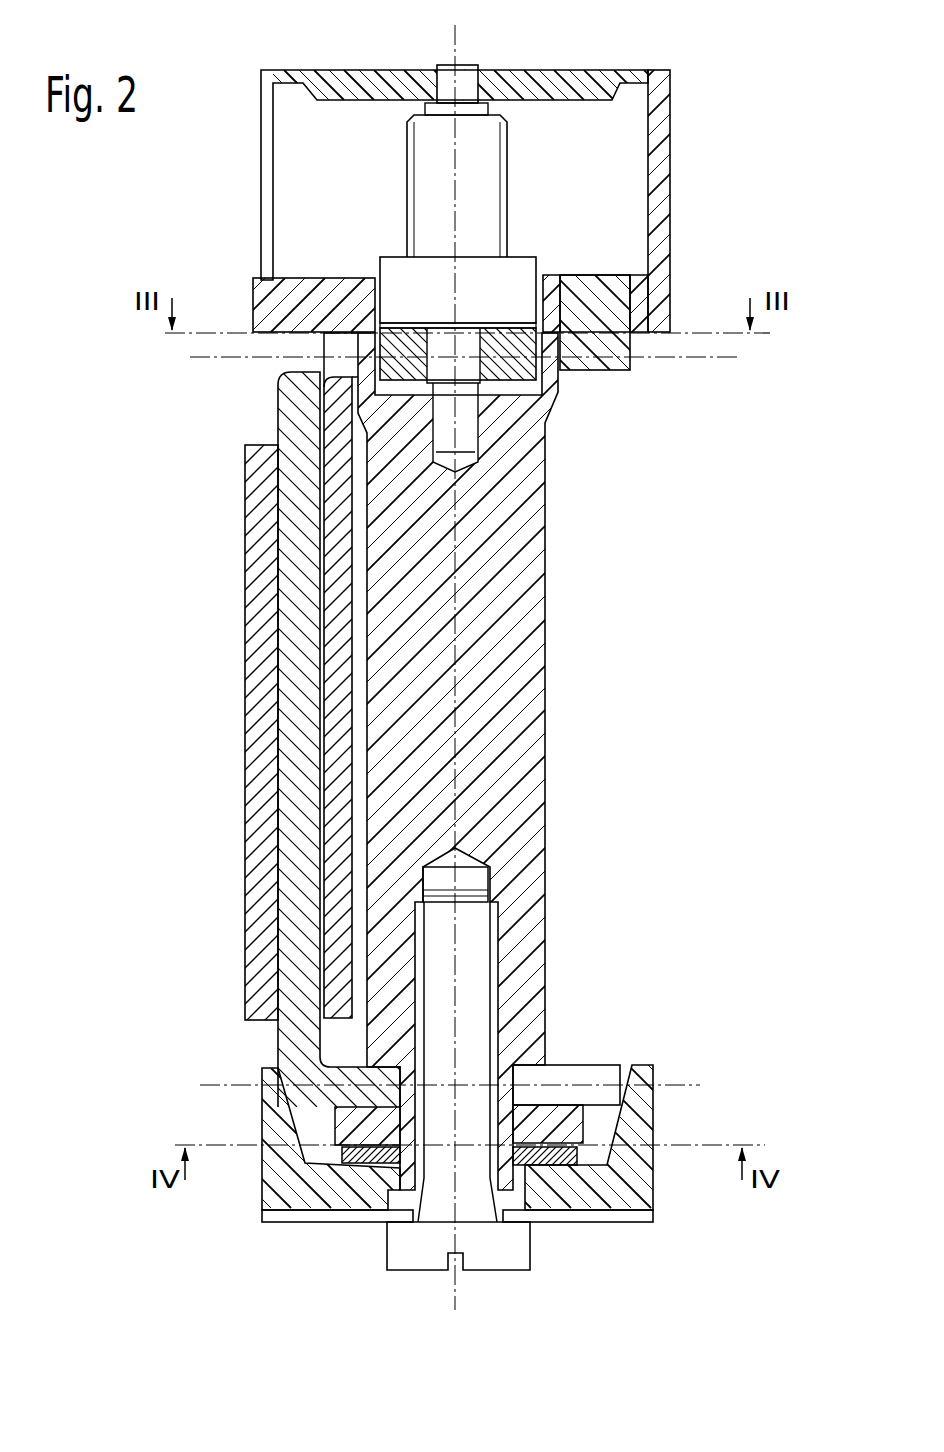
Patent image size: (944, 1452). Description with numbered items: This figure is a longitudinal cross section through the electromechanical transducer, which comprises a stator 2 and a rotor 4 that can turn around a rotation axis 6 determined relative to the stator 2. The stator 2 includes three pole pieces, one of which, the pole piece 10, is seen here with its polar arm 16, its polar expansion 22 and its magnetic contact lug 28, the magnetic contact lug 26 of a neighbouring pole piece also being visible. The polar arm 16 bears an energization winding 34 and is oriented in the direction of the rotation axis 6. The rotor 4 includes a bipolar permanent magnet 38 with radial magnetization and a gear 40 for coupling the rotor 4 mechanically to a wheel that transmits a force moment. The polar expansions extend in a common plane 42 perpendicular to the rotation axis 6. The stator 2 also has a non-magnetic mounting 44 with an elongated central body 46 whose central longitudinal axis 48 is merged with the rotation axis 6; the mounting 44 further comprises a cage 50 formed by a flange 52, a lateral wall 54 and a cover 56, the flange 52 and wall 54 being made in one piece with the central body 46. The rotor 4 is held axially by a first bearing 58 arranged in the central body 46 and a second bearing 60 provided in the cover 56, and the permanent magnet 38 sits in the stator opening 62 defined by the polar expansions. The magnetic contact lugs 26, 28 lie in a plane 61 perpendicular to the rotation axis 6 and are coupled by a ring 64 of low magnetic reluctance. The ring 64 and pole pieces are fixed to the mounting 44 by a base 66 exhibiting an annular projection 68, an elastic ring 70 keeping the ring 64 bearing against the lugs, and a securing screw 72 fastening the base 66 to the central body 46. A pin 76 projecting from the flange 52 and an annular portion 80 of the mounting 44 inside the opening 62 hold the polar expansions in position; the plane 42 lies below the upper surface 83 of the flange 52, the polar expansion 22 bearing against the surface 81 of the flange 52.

The stator 2 is at (750, 521).
The rotor 4 is at (522, 207).
The rotation axis 6 is at (455, 1025).
The pole piece 10 is at (290, 727).
The polar arm 16 is at (320, 630).
The polar expansion 22 is at (328, 347).
The magnetic contact lug 26 is at (582, 1076).
The magnetic contact lug 28 is at (345, 1090).
The energization winding 34 is at (258, 552).
The bipolar permanent magnet 38 is at (550, 400).
The gear 40 is at (432, 157).
The common plane 42 is at (235, 365).
The non-magnetic mounting 44 is at (642, 582).
The elongated central body 46 is at (517, 680).
The central longitudinal axis 48 is at (705, 993).
The cage 50 is at (744, 173).
The flange 52 is at (285, 298).
The lateral wall 54 is at (660, 140).
The cover 56 is at (592, 82).
The first bearing 58 is at (488, 417).
The second bearing 60 is at (486, 78).
The plane 61 is at (260, 1068).
The stator opening 62 is at (352, 368).
The ring 64 is at (368, 1125).
The base 66 is at (283, 1195).
The annular projection 68 is at (262, 1102).
The elastic ring 70 is at (556, 1170).
The securing screw 72 is at (478, 930).
The pin 76 is at (575, 376).
The annular portion 80 is at (560, 385).
The surface of flange 81 is at (662, 334).
The upper surface of flange 83 is at (323, 276).